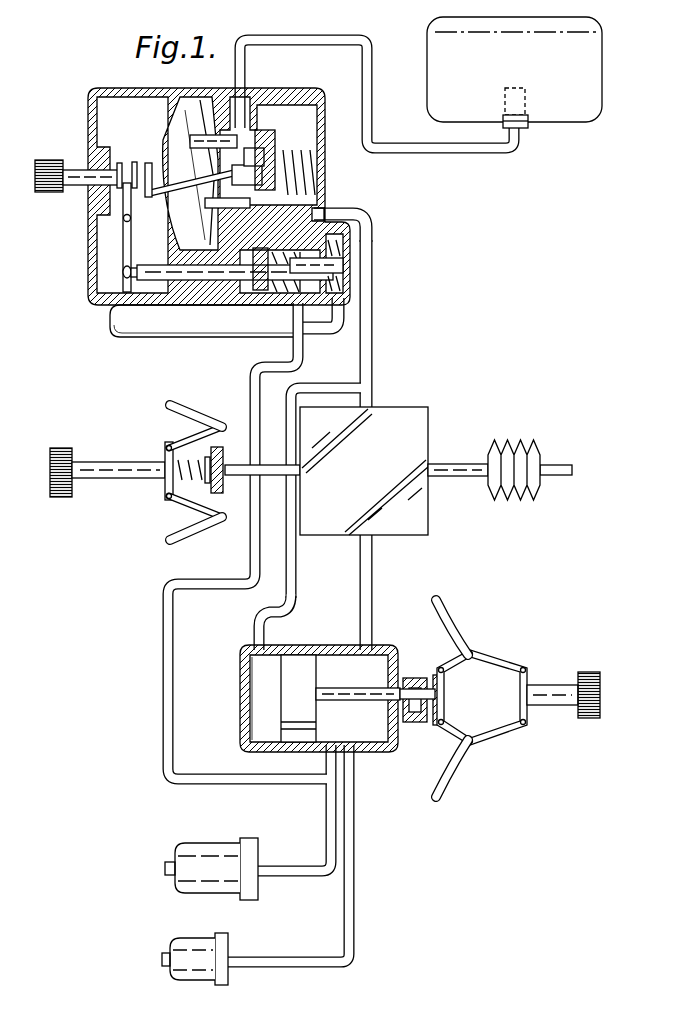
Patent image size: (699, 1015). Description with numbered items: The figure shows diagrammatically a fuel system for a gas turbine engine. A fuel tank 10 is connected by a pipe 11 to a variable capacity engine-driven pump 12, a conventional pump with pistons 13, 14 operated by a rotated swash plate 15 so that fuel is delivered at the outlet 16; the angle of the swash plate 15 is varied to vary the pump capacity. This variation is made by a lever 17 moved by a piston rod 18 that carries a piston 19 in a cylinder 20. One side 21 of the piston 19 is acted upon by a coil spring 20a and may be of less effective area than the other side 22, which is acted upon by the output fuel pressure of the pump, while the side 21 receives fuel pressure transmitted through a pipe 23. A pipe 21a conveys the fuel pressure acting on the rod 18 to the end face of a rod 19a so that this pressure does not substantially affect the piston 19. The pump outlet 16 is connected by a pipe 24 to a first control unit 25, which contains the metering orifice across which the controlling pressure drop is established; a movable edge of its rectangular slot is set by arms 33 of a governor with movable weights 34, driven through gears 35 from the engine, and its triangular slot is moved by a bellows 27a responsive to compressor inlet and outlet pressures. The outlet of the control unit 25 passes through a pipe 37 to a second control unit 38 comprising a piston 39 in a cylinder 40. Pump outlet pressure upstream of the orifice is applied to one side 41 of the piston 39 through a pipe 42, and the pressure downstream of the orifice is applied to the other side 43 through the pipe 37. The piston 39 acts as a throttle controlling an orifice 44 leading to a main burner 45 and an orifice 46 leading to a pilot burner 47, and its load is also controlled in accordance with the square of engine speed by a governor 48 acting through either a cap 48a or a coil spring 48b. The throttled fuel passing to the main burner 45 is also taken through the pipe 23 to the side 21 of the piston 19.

The fuel tank 10 is at (577, 108).
The pipe 11 is at (403, 149).
The variable capacity engine-driven pump 12 is at (98, 89).
The piston 13 is at (195, 150).
The piston 14 is at (195, 262).
The swash plate 15 is at (191, 133).
The outlet 16 is at (369, 226).
The lever 17 is at (120, 247).
The piston rod 18 is at (147, 282).
The piston 19 is at (273, 289).
The rod 19a is at (334, 277).
The cylinder 20 is at (250, 282).
The coil spring 20a is at (324, 254).
The side of piston 21 is at (286, 289).
The pipe 21a is at (112, 330).
The side of piston 22 is at (262, 293).
The pipe 23 is at (345, 324).
The pipe 24 is at (368, 352).
The first control unit 25 is at (380, 421).
The bellows 27a is at (507, 443).
The arms 33 is at (224, 432).
The movable weights 34 is at (165, 411).
The gear 35 is at (67, 496).
The pipe 37 is at (370, 557).
The second control unit 38 is at (257, 637).
The piston 39 is at (290, 710).
The cylinder 40 is at (334, 660).
The side of piston 41 is at (278, 677).
The pipe 42 is at (279, 580).
The side of piston 43 is at (313, 681).
The orifice 44 is at (328, 755).
The main burner 45 is at (197, 850).
The orifice 46 is at (352, 760).
The pilot burner 47 is at (188, 948).
The governor 48 is at (488, 711).
The cap 48a is at (423, 724).
The coil spring 48b is at (417, 677).